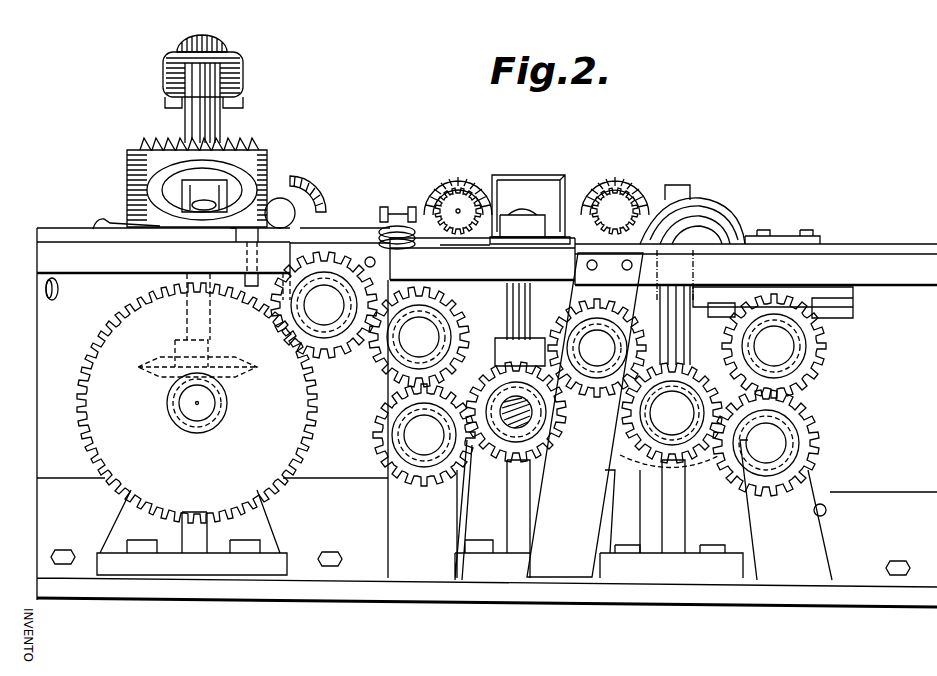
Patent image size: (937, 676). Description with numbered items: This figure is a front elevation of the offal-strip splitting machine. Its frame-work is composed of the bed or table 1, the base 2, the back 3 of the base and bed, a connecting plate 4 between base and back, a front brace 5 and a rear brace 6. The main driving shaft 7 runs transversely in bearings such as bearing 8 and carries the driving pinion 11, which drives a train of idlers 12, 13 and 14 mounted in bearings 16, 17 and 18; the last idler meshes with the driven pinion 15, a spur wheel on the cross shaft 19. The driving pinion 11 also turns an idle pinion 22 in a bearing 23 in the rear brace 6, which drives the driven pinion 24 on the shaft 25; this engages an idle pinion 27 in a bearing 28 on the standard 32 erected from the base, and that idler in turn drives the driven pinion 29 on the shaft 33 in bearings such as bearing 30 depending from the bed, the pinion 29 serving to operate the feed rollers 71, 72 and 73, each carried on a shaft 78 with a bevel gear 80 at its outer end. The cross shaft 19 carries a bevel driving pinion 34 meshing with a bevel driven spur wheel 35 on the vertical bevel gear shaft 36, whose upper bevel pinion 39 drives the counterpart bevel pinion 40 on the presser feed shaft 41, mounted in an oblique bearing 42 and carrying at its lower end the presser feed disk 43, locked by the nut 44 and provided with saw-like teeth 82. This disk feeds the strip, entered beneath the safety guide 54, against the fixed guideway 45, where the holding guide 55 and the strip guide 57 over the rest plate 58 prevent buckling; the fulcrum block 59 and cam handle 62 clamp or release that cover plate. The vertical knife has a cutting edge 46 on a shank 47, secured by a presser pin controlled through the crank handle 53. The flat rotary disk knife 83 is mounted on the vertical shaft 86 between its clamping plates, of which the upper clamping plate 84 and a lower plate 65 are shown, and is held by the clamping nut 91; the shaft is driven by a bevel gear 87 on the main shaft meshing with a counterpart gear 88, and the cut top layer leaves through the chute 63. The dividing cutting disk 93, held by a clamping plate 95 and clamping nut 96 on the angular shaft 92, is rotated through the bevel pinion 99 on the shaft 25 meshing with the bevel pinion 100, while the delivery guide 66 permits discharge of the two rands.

The bed or table 1 is at (120, 265).
The base 2 is at (487, 417).
The back of the base and bed 3 is at (45, 350).
The connecting plate 4 is at (62, 480).
The front brace 5 is at (422, 429).
The rear brace 6 is at (635, 415).
The main driving shaft 7 is at (513, 430).
The bearing 8 is at (492, 510).
The driving pinion 11 is at (533, 432).
The idler pinion 12 is at (387, 447).
The idler pinion 13 is at (397, 347).
The idler pinion 14 is at (338, 340).
The driven pinion 15 is at (254, 409).
The bearing 16 is at (400, 432).
The bearing 17 is at (395, 362).
The bearing 18 is at (322, 308).
The cross shaft 19 is at (193, 410).
The idle pinion 22 is at (590, 398).
The bearing 23 is at (597, 330).
The driven pinion 24 is at (630, 427).
The shaft 25 is at (672, 413).
The idle pinion 27 is at (823, 453).
The bearing 28 is at (787, 437).
The driven pinion 29 is at (817, 383).
The bearing 30 is at (830, 297).
The standard 32 is at (786, 510).
The shaft 33 is at (790, 350).
The bevel driving pinion 34 is at (157, 398).
The bevel driven spur wheel 35 is at (163, 383).
The bevel gear shaft 36 is at (186, 320).
The bevel pinion 39 is at (176, 97).
The bevel pinion 40 is at (178, 50).
The presser feed shaft 41 is at (173, 197).
The oblique bearing 42 is at (190, 118).
The presser feed disk 43 is at (170, 147).
The nut 44 is at (135, 177).
The guideway 45 is at (50, 232).
The cutting edge 46 is at (243, 232).
The shank 47 is at (250, 282).
The crank handle 53 is at (45, 288).
The entering safety guide 54 is at (104, 222).
The holding guide 55 is at (312, 224).
The strip guide 57 is at (343, 227).
The rest plate 58 is at (209, 350).
The fulcrum block 59 is at (386, 207).
The cam handle 62 is at (383, 238).
The chute 63 is at (522, 177).
The plate 65 is at (497, 243).
The delivery guide 66 is at (788, 240).
The feed roller 71 is at (294, 196).
The feed roller 72 is at (455, 205).
The feed roller 73 is at (625, 200).
The shaft 78 is at (270, 176).
The bevel gear 80 is at (313, 220).
The teeth 82 is at (235, 150).
The rotary disk knife 83 is at (457, 247).
The clamping plate 84 is at (495, 233).
The vertical shaft 86 is at (508, 300).
The bevel gear 87 is at (538, 476).
The bevel gear 88 is at (494, 358).
The clamping nut 91 is at (520, 217).
The shaft 92 is at (693, 292).
The dividing cutting disk 93 is at (728, 228).
The clamping plate 95 is at (707, 210).
The clamping nut 96 is at (678, 193).
The bevel pinion 99 is at (680, 377).
The bevel pinion 100 is at (647, 478).